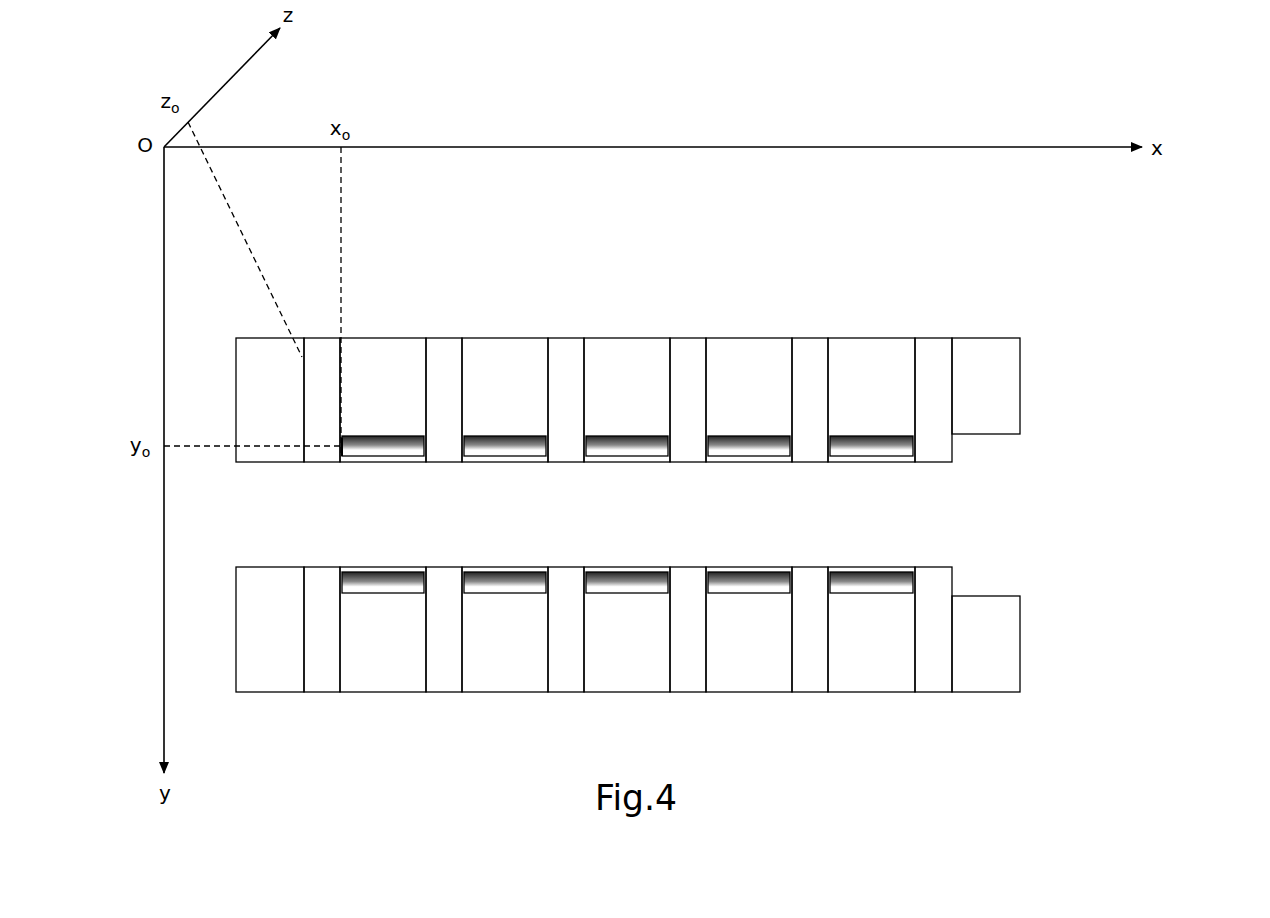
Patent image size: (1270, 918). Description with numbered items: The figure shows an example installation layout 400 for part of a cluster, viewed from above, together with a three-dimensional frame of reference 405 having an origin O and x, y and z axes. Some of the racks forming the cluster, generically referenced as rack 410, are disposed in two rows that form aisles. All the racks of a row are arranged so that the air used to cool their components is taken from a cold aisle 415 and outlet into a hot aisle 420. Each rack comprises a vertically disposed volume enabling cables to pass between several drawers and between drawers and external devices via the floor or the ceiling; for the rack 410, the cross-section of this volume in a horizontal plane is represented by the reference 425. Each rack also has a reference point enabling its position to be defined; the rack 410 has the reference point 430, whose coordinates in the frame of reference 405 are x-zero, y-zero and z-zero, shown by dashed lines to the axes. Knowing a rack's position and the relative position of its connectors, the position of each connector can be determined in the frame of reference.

The installation layout 400 is at (1133, 566).
The three-dimensional frame of reference 405 is at (657, 147).
The rack 410 is at (408, 350).
The cold aisle 415 is at (997, 277).
The hot aisle 420 is at (997, 511).
The cable passage volume cross-section 425 is at (402, 448).
The reference point 430 is at (347, 445).